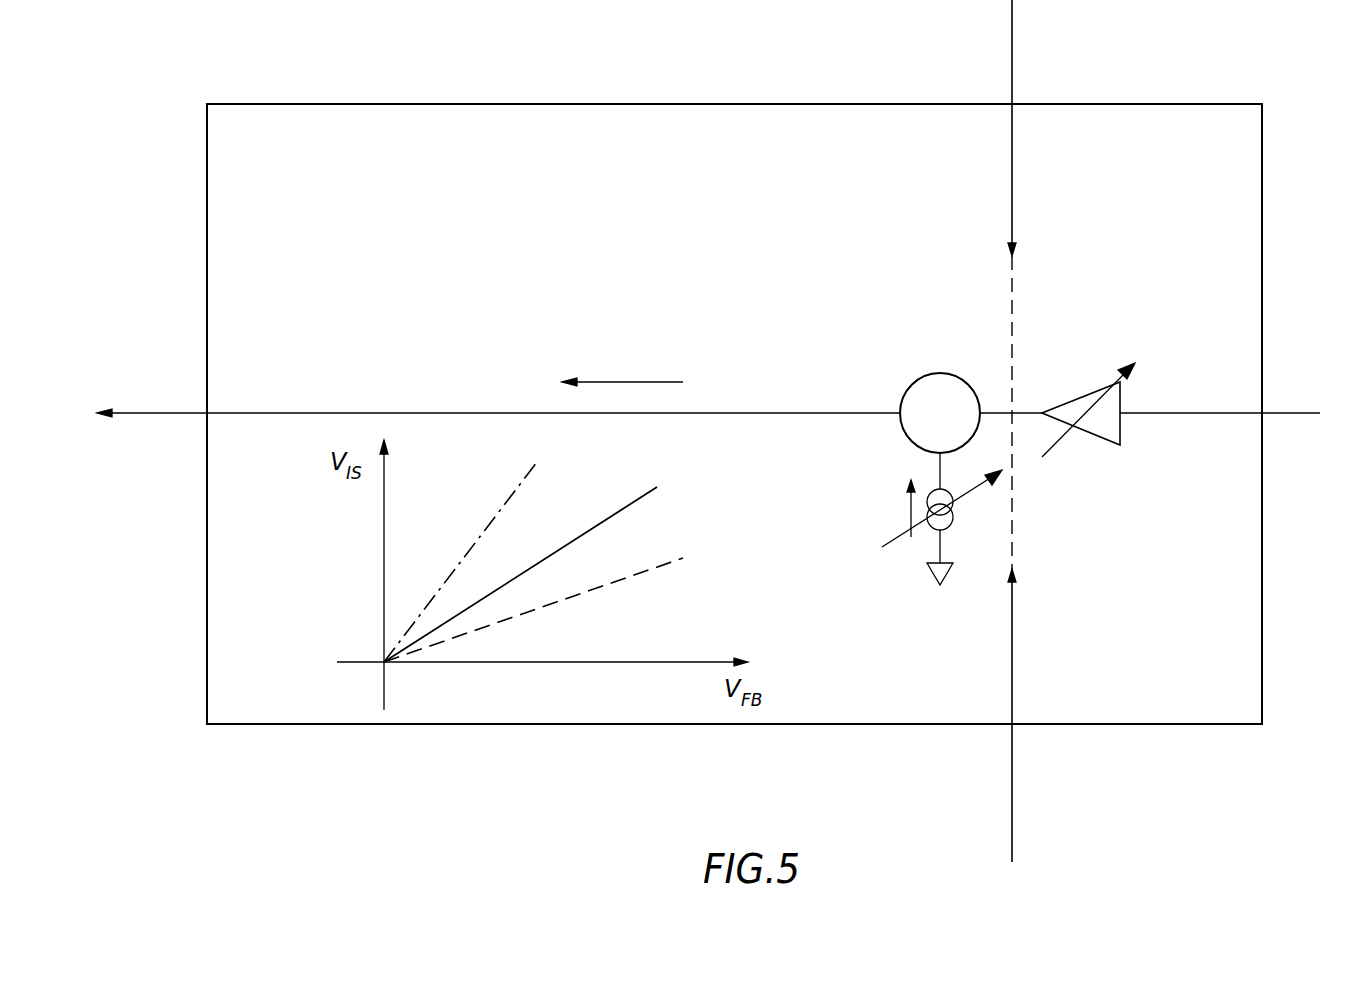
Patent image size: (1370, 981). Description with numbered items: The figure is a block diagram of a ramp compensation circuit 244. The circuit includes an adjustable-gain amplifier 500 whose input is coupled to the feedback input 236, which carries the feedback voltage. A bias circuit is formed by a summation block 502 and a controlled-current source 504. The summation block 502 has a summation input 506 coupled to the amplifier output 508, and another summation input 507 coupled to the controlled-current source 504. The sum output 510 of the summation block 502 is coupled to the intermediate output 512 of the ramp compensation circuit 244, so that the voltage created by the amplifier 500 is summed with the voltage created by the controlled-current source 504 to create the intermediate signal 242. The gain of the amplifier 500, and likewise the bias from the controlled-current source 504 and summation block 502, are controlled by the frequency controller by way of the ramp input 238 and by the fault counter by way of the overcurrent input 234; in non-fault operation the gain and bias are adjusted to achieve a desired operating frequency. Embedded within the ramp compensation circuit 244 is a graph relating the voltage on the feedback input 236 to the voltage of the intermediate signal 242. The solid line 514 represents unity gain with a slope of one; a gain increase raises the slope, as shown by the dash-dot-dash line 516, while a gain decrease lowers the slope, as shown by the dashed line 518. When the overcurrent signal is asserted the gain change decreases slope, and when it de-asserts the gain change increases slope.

The ramp compensation circuit 244 is at (377, 213).
The overcurrent input 234 is at (1015, 102).
The feedback input 236 is at (1262, 412).
The ramp input 238 is at (1013, 725).
The intermediate signal 242 is at (630, 382).
The intermediate output 512 is at (208, 410).
The sum output 510 is at (903, 405).
The summation block 502 is at (930, 374).
The summation input 506 is at (982, 405).
The summation input 507 is at (933, 453).
The controlled-current source 504 is at (908, 548).
The amplifier output 508 is at (1043, 412).
The adjustable-gain amplifier 500 is at (1092, 392).
The solid line 514 is at (622, 512).
The dash-dot-dash line 516 is at (530, 470).
The dashed line 518 is at (590, 592).